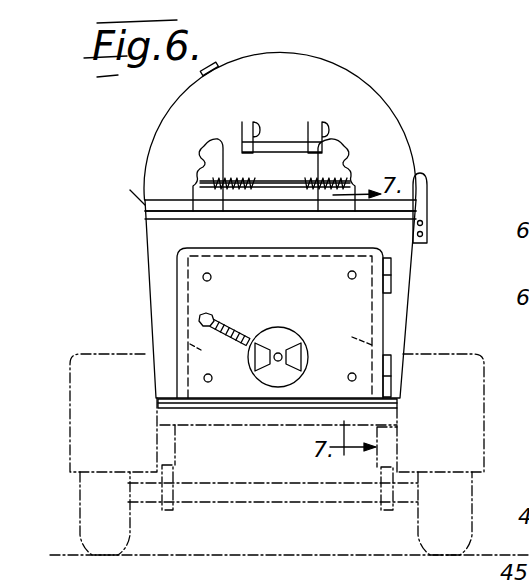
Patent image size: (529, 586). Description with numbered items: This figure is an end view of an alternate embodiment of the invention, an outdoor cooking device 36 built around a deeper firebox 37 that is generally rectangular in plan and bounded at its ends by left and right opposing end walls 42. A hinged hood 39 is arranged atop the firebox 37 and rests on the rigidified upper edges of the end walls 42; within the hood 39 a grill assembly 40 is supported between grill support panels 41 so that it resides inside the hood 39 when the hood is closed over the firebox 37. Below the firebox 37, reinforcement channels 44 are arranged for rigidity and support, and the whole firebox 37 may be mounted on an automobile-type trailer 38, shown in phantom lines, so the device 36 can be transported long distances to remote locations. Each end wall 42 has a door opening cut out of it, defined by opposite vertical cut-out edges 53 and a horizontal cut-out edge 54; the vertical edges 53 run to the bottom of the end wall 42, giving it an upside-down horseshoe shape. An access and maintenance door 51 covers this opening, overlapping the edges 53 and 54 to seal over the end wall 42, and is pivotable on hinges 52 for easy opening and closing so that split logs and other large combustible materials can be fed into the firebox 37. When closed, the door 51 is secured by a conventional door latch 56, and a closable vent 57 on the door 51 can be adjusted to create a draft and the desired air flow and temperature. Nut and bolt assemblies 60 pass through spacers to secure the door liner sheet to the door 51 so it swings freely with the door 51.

The outdoor cooking device 36 is at (350, 58).
The firebox 37 is at (146, 277).
The automobile-type trailer 38 is at (78, 502).
The hinged hood 39 is at (362, 92).
The grill assembly 40 is at (195, 170).
The grill support panels 41 is at (352, 158).
The end walls 42 is at (157, 233).
The reinforcement channels 44 is at (220, 408).
The access and maintenance door 51 is at (233, 323).
The hinges 52 is at (391, 276).
The vertical cut-out edges 53 is at (281, 340).
The horizontal cut-out edge 54 is at (280, 327).
The door latch 56 is at (228, 331).
The closable vent 57 is at (298, 328).
The nut and bolt assemblies 60 is at (210, 273).